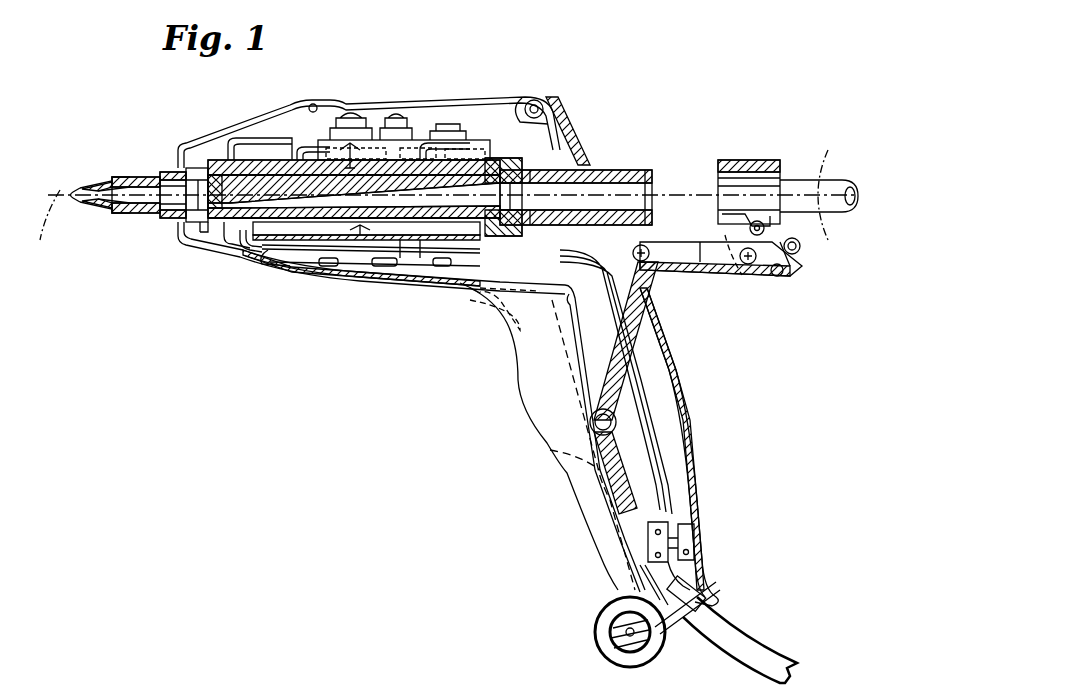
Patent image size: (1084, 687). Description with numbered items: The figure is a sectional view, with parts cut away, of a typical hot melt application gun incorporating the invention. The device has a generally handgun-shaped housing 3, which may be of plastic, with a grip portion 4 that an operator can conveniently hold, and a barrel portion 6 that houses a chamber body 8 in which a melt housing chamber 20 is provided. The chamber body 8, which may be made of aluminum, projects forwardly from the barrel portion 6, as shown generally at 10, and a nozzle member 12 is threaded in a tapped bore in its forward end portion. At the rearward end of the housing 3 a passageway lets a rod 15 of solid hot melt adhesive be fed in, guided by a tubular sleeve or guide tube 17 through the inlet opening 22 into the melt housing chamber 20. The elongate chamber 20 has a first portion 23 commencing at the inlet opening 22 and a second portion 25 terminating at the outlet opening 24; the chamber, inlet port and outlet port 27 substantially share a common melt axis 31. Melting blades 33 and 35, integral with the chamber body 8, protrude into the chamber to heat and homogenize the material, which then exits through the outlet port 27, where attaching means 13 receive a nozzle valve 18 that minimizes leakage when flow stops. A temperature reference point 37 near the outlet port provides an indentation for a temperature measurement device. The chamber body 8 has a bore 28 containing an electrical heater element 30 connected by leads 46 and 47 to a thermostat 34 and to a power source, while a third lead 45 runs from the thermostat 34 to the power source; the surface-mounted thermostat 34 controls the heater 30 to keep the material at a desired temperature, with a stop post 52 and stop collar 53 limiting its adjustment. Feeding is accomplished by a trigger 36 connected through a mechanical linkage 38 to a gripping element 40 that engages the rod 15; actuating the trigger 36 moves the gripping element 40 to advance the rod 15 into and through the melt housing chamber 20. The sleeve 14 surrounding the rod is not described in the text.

The housing 3 is at (566, 128).
The grip portion 4 is at (694, 436).
The barrel portion 6 is at (524, 100).
The chamber body 8 is at (248, 138).
The forward projection of chamber body 10 is at (95, 250).
The nozzle member 12 is at (96, 207).
The attaching means 13 is at (190, 170).
The guide sleeve 14 is at (772, 182).
The rod 15 is at (812, 168).
The guide tube 17 is at (640, 170).
The nozzle valve 18 is at (110, 180).
The melt housing chamber 20 is at (365, 248).
The inlet opening 22 is at (530, 175).
The first portion 23 is at (530, 150).
The outlet opening 24 is at (165, 176).
The second portion 25 is at (225, 238).
The outlet port 27 is at (190, 228).
The bore 28 is at (466, 290).
The heater element 30 is at (345, 268).
The melt axis 31 is at (46, 222).
The melting blade 33 is at (405, 258).
The thermostat 34 is at (358, 130).
The melting blade 35 is at (290, 262).
The trigger 36 is at (558, 364).
The temperature reference point 37 is at (214, 158).
The mechanical linkage 38 is at (652, 288).
The gripping element 40 is at (765, 268).
The third lead 45 is at (290, 108).
The lead 46 is at (235, 252).
The lead 47 is at (262, 264).
The stop post 52 is at (497, 110).
The stop collar 53 is at (428, 124).